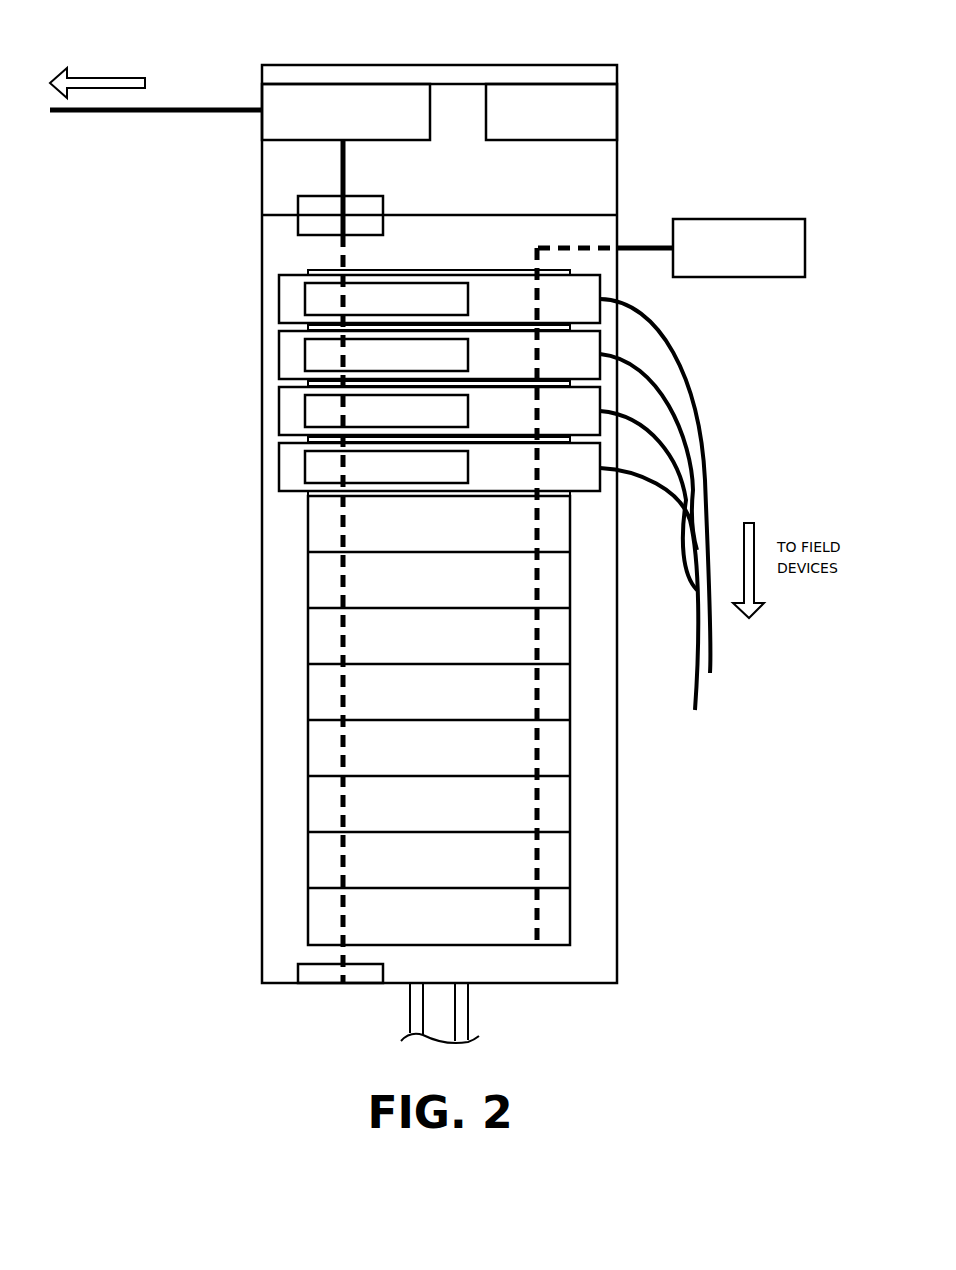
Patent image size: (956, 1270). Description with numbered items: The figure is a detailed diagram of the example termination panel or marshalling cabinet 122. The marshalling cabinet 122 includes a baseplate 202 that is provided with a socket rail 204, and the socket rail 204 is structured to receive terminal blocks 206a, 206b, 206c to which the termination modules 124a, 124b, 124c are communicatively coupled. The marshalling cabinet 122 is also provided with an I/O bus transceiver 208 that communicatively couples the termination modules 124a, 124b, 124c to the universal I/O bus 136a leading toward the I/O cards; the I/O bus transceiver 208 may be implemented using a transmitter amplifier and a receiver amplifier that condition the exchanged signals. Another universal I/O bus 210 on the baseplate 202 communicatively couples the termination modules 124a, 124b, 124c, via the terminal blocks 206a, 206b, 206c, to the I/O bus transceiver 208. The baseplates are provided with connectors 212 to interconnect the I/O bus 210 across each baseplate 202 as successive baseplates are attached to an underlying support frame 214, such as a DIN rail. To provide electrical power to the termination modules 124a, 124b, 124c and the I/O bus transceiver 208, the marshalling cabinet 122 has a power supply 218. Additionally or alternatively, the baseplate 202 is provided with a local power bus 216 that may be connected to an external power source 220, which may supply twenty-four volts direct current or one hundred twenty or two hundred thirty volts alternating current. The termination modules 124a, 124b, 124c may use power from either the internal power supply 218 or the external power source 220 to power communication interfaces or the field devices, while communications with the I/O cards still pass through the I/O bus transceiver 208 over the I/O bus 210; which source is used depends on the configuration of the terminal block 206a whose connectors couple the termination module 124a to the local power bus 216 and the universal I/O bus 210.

The marshalling cabinet 122 is at (286, 48).
The universal I/O bus 136a is at (180, 107).
The baseplate 202 is at (270, 688).
The socket rail 204 is at (560, 798).
The terminal block 206a is at (288, 300).
The terminal block 206b is at (288, 358).
The terminal block 206c is at (288, 415).
The termination module 124a is at (315, 290).
The termination module 124b is at (315, 347).
The termination module 124c is at (315, 403).
The I/O bus transceiver 208 is at (398, 84).
The universal I/O bus 210 is at (347, 178).
The connectors 212 is at (308, 224).
The support frame 214 is at (445, 1010).
The local power bus 216 is at (574, 243).
The power supply 218 is at (555, 84).
The external power source 220 is at (750, 219).